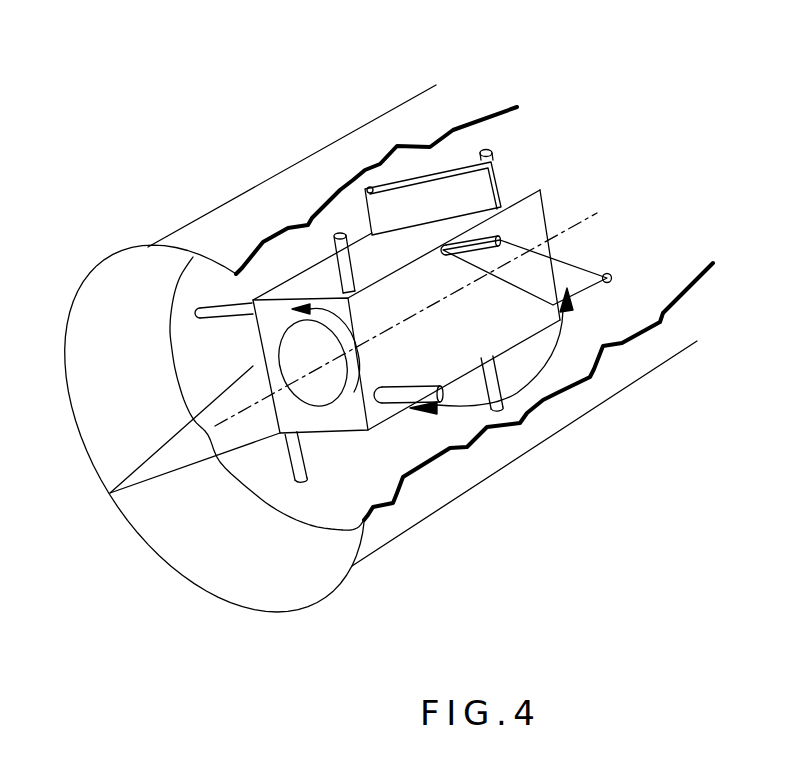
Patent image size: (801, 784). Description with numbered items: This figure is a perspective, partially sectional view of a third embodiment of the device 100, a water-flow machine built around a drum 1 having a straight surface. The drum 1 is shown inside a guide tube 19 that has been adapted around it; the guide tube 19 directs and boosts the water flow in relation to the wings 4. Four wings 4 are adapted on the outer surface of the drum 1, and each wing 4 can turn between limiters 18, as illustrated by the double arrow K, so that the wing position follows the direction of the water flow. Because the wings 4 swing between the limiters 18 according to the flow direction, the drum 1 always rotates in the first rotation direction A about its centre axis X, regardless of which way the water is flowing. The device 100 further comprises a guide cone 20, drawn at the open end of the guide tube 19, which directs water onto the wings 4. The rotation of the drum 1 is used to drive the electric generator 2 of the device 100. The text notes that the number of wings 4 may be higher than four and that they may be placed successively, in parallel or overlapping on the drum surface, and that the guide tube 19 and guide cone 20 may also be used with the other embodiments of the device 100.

The device 100 is at (665, 111).
The guide tube 19 is at (93, 305).
The electric generator 2 is at (340, 190).
The wing 4 is at (437, 195).
The limiter 18 is at (330, 240).
The guide cone 20 is at (157, 470).
The drum 1 is at (458, 325).
The first rotation direction A is at (342, 345).
The double arrow illustrating turning of wings K is at (563, 331).
The centre axis of drum X is at (404, 316).